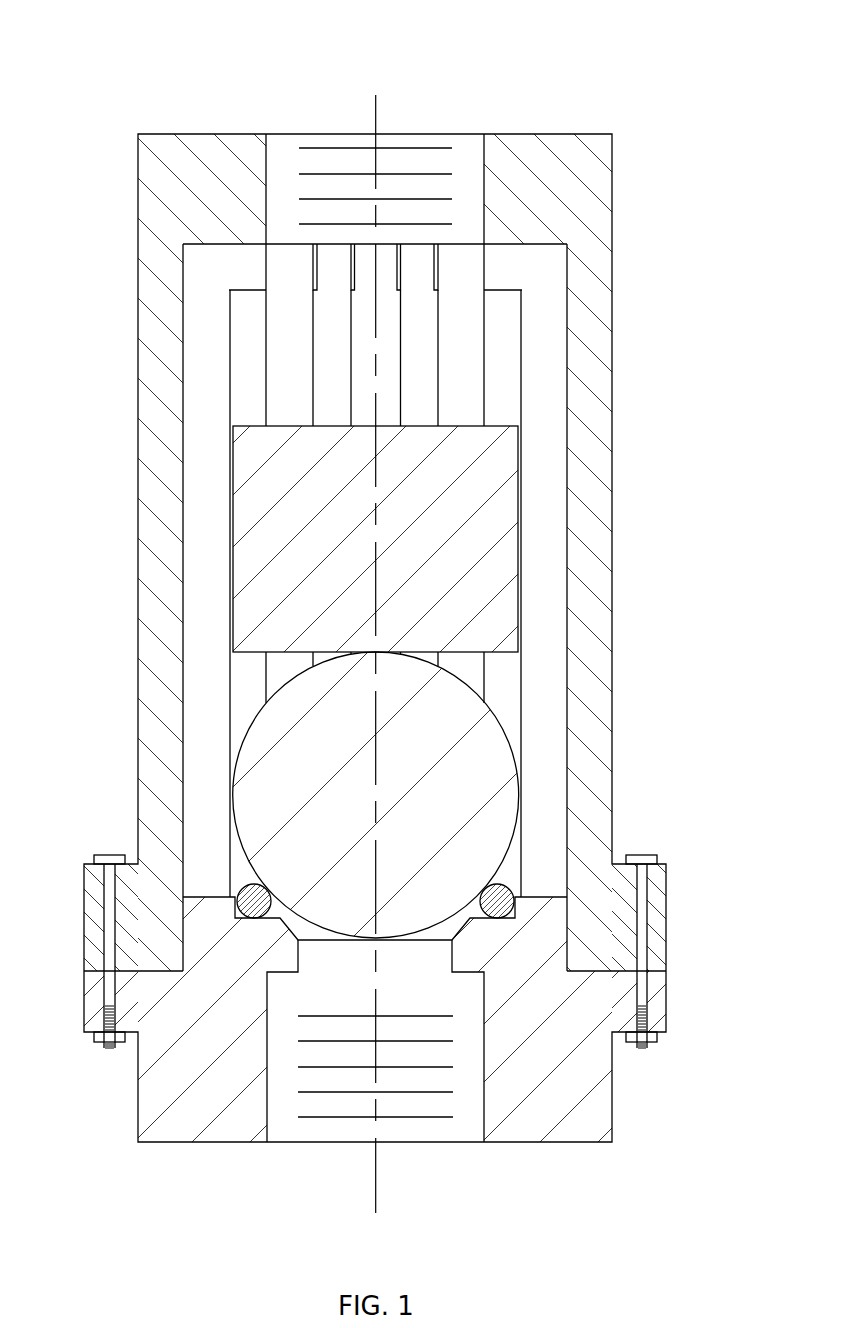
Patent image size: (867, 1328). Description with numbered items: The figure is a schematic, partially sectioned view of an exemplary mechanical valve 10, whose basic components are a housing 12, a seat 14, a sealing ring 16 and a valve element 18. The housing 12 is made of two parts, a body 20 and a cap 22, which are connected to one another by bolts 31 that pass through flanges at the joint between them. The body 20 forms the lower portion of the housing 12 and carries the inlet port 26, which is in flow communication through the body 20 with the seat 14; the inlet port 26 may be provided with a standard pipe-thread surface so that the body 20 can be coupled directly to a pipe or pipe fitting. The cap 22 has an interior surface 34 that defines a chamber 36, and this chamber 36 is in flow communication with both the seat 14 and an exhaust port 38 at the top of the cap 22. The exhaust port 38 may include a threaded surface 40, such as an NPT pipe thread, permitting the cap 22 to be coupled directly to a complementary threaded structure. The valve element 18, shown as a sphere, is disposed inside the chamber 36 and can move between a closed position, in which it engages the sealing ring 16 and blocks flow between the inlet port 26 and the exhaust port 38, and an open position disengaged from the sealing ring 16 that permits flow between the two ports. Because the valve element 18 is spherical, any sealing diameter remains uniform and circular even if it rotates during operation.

The valve 10 is at (618, 45).
The housing 12 is at (628, 540).
The seat 14 is at (243, 915).
The sealing ring 16 is at (244, 890).
The valve element 18 is at (470, 795).
The body 20 is at (603, 1102).
The cap 22 is at (608, 713).
The inlet port 26 is at (305, 1140).
The bolts 31 is at (646, 859).
The interior surface 34 is at (570, 320).
The chamber 36 is at (542, 307).
The exhaust port 38 is at (425, 137).
The threaded surface 40 is at (267, 150).